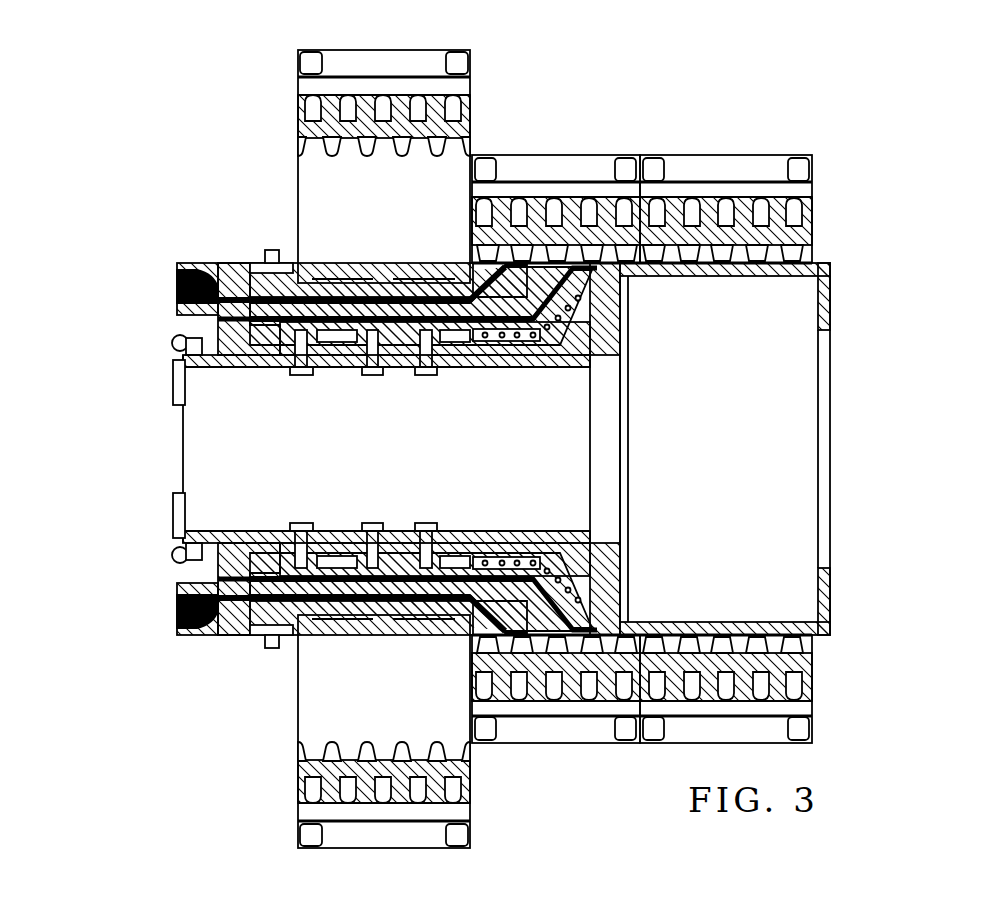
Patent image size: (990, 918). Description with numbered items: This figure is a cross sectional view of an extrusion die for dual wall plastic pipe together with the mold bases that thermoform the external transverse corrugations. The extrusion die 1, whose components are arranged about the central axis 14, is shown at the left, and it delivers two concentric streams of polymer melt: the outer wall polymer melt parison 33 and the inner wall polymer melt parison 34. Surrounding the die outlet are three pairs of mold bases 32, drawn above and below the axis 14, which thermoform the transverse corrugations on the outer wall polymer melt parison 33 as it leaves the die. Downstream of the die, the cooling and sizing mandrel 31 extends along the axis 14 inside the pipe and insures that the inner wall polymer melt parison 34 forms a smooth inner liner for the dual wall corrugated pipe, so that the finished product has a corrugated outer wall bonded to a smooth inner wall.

The extrusion die 1 is at (218, 233).
The axis 14 is at (148, 448).
The cooling and sizing mandrel 31 is at (620, 347).
The mold bases 32 is at (637, 262).
The outer wall polymer melt parison 33 is at (470, 260).
The inner wall polymer melt parison 34 is at (612, 263).